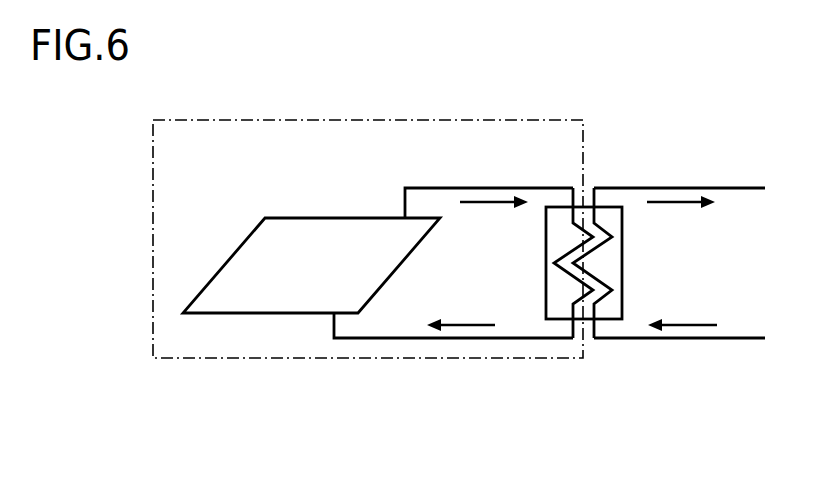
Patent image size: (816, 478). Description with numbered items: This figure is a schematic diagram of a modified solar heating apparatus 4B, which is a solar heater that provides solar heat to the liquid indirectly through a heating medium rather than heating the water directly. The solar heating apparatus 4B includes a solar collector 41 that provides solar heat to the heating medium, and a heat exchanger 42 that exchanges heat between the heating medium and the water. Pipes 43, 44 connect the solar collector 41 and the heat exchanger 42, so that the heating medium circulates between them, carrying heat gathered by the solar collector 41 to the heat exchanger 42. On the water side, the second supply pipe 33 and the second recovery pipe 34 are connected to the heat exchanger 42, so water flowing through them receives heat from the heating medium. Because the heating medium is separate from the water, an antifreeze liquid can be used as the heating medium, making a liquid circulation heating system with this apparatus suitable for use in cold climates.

The solar heating apparatus 4B is at (153, 237).
The solar collector 41 is at (248, 263).
The heat exchanger 42 is at (622, 238).
The pipe 43 is at (487, 188).
The pipe 44 is at (465, 338).
The second recovery pipe 34 is at (715, 188).
The second supply pipe 33 is at (685, 338).